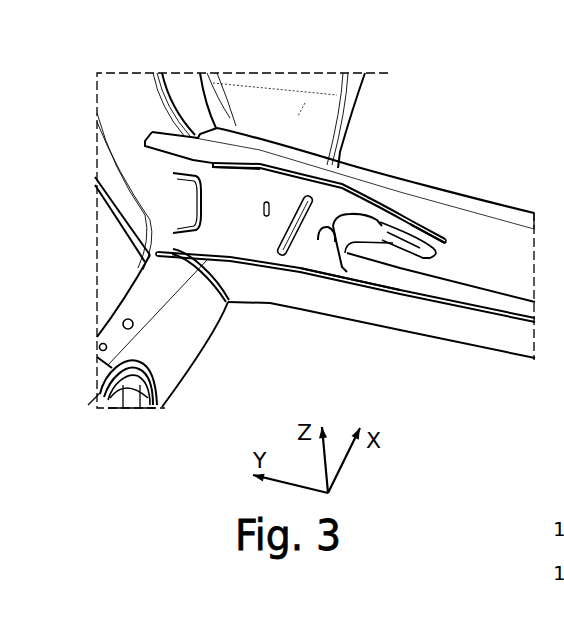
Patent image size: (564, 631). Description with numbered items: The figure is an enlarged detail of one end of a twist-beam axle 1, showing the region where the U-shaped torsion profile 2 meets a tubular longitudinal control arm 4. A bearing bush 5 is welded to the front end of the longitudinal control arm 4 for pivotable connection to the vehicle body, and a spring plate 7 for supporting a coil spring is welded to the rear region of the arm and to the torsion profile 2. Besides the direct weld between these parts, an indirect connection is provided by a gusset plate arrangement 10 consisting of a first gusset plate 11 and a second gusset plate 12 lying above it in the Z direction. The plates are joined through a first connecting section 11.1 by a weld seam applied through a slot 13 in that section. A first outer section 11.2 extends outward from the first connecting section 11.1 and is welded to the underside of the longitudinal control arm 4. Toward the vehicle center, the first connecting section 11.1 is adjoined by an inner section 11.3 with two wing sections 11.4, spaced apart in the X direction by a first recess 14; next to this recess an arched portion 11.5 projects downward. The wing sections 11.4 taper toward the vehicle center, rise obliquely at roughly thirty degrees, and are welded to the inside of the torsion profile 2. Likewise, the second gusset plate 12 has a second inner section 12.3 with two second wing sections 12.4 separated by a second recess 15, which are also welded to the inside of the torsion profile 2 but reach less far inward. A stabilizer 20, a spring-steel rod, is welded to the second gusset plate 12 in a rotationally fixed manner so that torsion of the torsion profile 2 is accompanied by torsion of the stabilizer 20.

The twist-beam axle 1 is at (442, 78).
The torsion profile 2 is at (503, 340).
The longitudinal control arm 4 is at (140, 222).
The bearing bush 5 is at (100, 392).
The spring plate 7 is at (305, 103).
The gusset plate arrangement 10 is at (343, 183).
The first gusset plate 11 is at (247, 252).
The first connecting section 11.1 is at (268, 187).
The first outer section 11.2 is at (208, 196).
The inner section 11.3 is at (411, 222).
The wing section 11.4 is at (411, 222).
The arched portion 11.5 is at (305, 247).
The second gusset plate 12 is at (318, 243).
The second inner section 12.3 is at (385, 256).
The second wing section 12.4 is at (385, 256).
The slot 13 is at (283, 231).
The first recess 14 is at (369, 222).
The second recess 15 is at (365, 283).
The stabilizer 20 is at (450, 280).